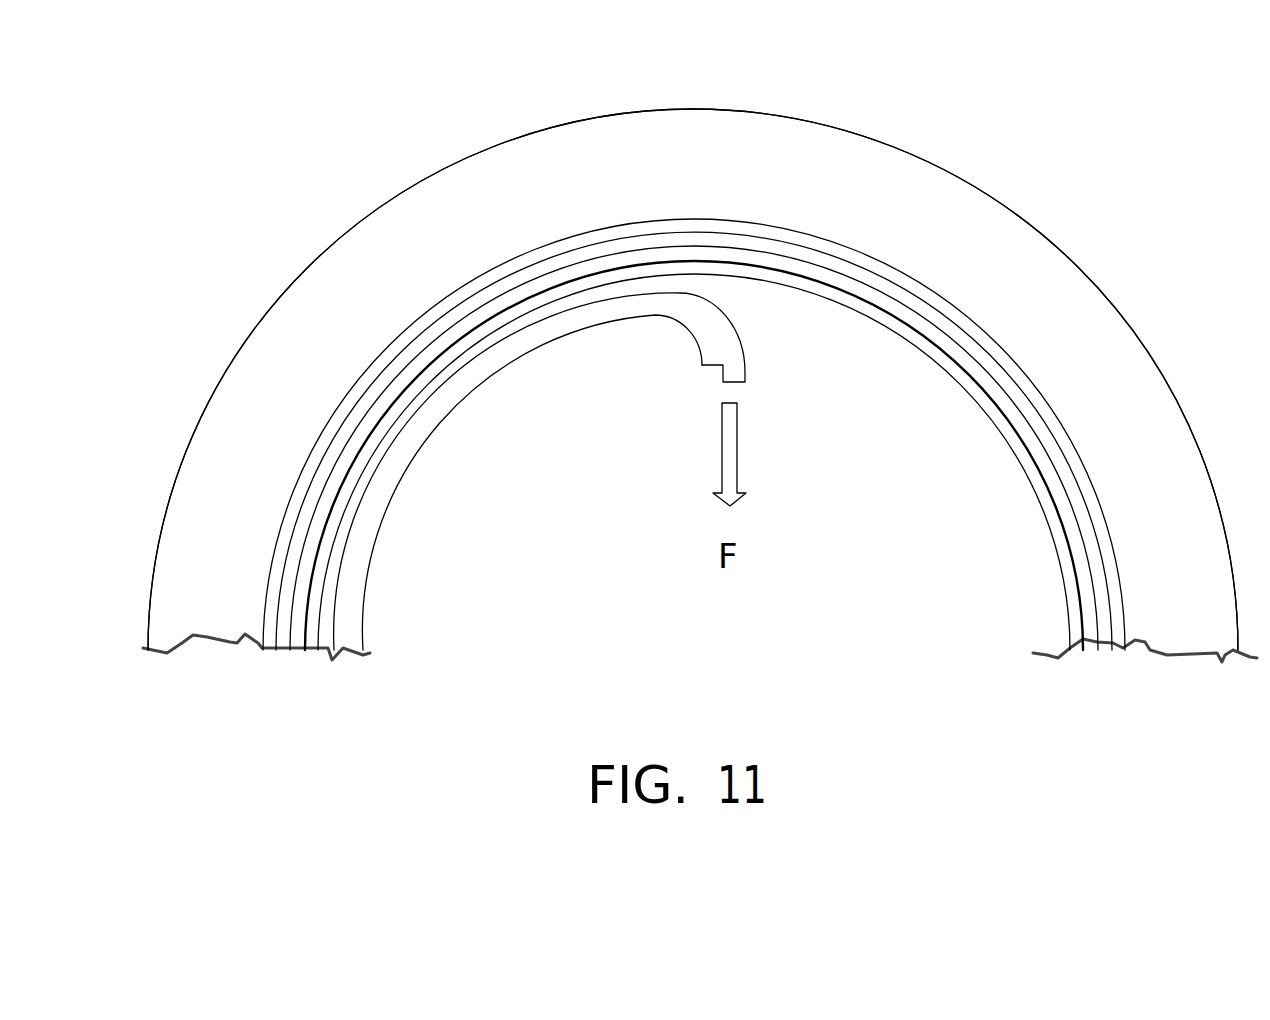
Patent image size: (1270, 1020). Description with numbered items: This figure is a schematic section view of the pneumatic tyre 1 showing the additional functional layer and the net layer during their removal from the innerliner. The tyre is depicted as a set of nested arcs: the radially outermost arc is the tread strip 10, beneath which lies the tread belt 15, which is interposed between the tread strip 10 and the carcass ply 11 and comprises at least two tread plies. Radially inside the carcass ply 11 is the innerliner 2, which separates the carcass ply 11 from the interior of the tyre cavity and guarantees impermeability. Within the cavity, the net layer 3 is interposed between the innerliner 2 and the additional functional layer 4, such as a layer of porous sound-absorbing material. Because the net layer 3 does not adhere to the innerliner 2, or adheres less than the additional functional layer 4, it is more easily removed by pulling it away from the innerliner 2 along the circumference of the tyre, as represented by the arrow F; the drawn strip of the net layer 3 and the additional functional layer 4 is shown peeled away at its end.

The pneumatic tyre 1 is at (1095, 220).
The tread strip 10 is at (976, 161).
The tread belt 15 is at (437, 289).
The carcass ply 11 is at (1026, 460).
The innerliner 2 is at (951, 394).
The net layer 3 is at (751, 384).
The additional functional layer 4 is at (473, 413).